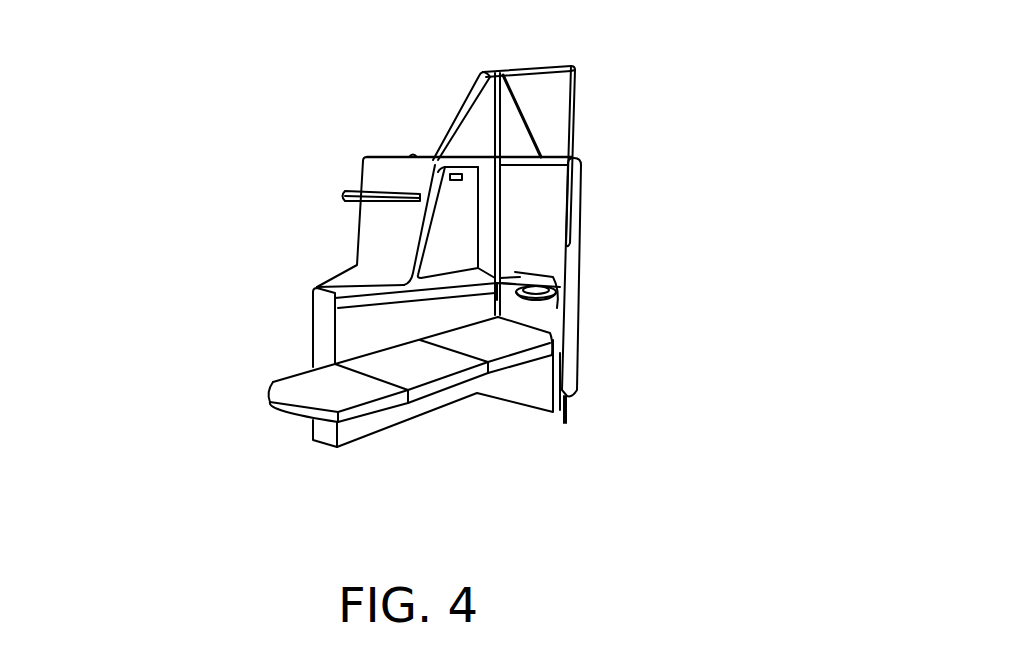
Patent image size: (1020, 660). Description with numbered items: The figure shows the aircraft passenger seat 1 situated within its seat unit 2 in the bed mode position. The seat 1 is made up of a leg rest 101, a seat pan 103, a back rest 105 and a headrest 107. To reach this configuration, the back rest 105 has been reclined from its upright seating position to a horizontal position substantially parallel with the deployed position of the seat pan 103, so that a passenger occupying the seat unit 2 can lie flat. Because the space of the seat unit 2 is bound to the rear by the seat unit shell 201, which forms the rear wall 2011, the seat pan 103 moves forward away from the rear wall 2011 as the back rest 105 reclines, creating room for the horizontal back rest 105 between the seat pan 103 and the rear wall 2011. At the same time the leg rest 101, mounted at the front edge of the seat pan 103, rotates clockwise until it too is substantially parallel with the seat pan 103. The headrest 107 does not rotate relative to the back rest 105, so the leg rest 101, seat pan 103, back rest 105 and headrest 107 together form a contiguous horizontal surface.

The aircraft passenger seat 1 is at (558, 443).
The seat unit 2 is at (286, 109).
The leg rest 101 is at (330, 392).
The seat pan 103 is at (417, 368).
The back rest 105 is at (465, 340).
The headrest 107 is at (557, 330).
The seat unit shell 201 is at (380, 232).
The rear wall 2011 is at (535, 205).